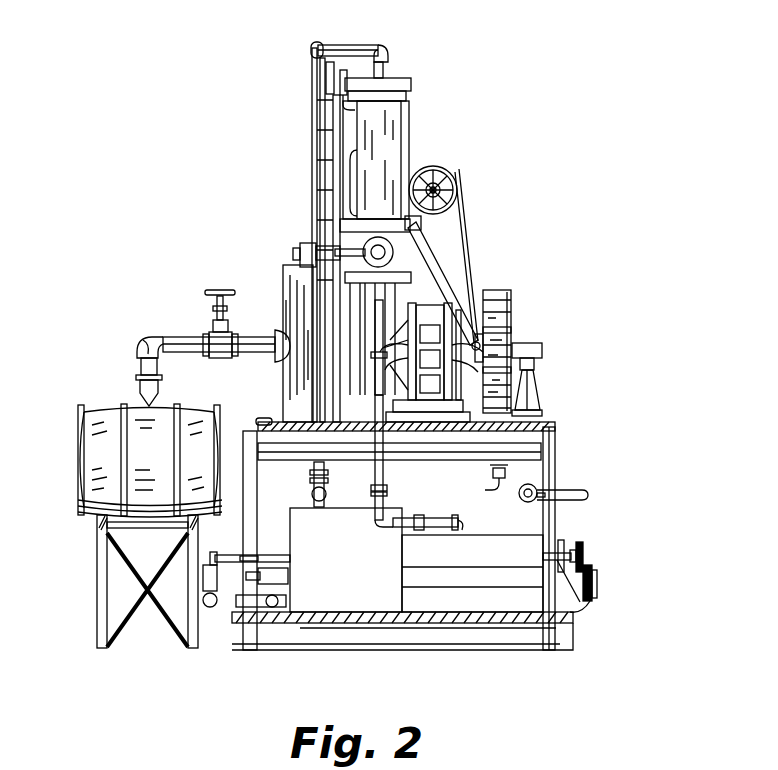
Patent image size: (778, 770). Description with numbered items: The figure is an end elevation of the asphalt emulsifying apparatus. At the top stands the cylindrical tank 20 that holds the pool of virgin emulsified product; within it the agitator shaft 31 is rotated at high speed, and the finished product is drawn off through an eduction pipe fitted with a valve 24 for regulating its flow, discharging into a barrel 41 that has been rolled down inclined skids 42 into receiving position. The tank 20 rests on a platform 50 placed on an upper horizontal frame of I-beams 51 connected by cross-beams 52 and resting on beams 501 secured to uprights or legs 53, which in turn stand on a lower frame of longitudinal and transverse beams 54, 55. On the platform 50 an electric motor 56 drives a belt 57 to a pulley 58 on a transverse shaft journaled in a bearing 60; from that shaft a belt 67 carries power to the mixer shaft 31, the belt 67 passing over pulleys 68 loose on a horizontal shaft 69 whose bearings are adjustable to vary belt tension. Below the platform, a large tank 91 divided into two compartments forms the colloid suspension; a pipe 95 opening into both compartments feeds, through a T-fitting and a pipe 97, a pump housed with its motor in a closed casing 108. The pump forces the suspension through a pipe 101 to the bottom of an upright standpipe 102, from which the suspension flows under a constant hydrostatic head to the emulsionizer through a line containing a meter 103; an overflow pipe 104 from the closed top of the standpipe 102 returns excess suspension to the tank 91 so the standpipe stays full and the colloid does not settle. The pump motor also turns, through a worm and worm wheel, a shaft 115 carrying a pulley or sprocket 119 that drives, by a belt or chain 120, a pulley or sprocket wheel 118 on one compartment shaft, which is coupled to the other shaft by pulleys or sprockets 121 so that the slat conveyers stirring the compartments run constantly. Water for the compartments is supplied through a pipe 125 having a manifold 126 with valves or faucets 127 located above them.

The cylindrical tank 20 is at (283, 278).
The valve 24 is at (210, 290).
The agitator shaft 31 is at (330, 80).
The barrel 41 is at (90, 445).
The inclined skids 42 is at (100, 528).
The platform 50 is at (545, 425).
The I-beams 51 is at (268, 425).
The cross-beams 52 is at (493, 477).
The uprights or legs 53 is at (255, 495).
The longitudinal beams 54 is at (575, 630).
The transverse beams 55 is at (512, 640).
The electric motor 56 is at (430, 312).
The belt 57 is at (497, 300).
The pulley 58 is at (510, 310).
The bearing 60 is at (537, 346).
The belt 67 is at (462, 238).
The pulleys 68 is at (441, 280).
The horizontal shaft 69 is at (455, 180).
The large tank 91 is at (430, 518).
The pipe 95 is at (252, 615).
The pipe 97 is at (334, 557).
The pipe 101 is at (383, 320).
The standpipe 102 is at (400, 136).
The meter 103 is at (300, 262).
The overflow pipe 104 is at (352, 45).
The closed box or casing 108 is at (472, 573).
The shaft 115 is at (548, 550).
The pulley or sprocket wheel 118 is at (600, 608).
The pulley or sprocket 119 is at (582, 545).
The belt or sprocket chain 120 is at (592, 572).
The pulleys or sprockets 121 is at (598, 590).
The pipe 125 is at (576, 488).
The manifold 126 is at (535, 484).
The valves or faucets 127 is at (552, 445).
The beams 501 is at (488, 448).